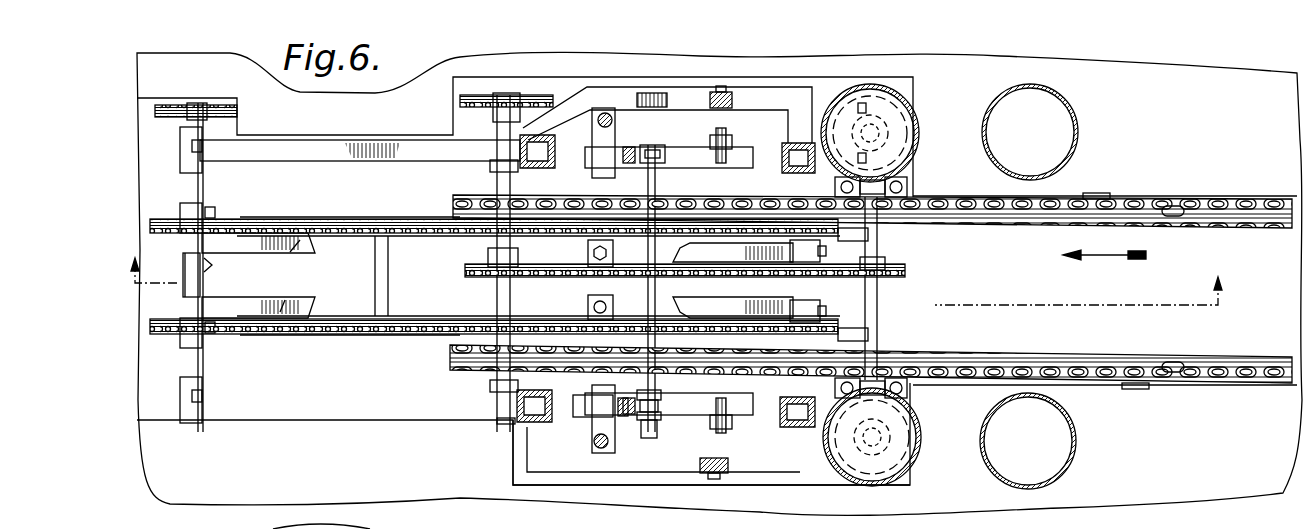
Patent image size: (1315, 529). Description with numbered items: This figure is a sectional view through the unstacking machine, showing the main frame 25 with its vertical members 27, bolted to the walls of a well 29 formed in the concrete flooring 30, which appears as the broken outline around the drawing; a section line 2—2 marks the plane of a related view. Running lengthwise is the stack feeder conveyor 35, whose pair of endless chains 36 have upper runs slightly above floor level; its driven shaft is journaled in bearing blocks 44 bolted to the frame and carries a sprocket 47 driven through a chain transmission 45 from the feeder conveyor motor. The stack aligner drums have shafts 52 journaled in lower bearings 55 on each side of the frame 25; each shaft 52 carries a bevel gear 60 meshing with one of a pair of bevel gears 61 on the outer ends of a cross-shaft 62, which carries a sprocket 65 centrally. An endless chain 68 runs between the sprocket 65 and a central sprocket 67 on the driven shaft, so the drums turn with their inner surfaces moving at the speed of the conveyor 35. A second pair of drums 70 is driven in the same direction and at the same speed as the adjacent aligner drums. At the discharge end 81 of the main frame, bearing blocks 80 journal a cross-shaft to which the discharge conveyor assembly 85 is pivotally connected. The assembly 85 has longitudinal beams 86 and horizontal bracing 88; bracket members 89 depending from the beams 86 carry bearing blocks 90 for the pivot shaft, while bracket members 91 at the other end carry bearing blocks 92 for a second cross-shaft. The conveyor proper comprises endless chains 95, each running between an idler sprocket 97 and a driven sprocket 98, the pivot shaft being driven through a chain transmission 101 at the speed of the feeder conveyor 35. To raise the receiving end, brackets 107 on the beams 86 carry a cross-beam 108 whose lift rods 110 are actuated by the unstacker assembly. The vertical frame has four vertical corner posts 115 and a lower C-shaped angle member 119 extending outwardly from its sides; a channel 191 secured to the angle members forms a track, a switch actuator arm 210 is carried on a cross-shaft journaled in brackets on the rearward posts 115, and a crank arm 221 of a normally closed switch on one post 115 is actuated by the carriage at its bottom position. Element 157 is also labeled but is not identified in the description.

The section line 2- 2 is at (674, 272).
The main frame 25 is at (1220, 386).
The vertical members 27 is at (1141, 390).
The well 29 is at (1097, 196).
The concrete flooring 30 is at (1222, 496).
The stack feeder conveyor 35 is at (1237, 205).
The endless chains 36 is at (1172, 210).
The bearing blocks 44 is at (493, 163).
The chain transmission 45 is at (460, 102).
The sprocket 47 is at (487, 96).
The shafts 52 is at (513, 425).
The lower bearings 55 is at (920, 113).
The bevel gear 60 is at (915, 127).
The bevel gears 61 is at (907, 155).
The cross-shaft 62 is at (878, 312).
The sprocket 65 is at (907, 180).
The central sprocket 67 is at (482, 266).
The endless chain 68 is at (545, 264).
The drums 70 is at (1078, 128).
The bearing blocks 80 is at (180, 141).
The discharge end 81 is at (259, 139).
The discharge conveyor assembly 85 is at (204, 185).
The longitudinal beams 86 is at (320, 217).
The horizontal bracing 88 is at (389, 268).
The bracket members 89 is at (295, 263).
The bearing block 90 is at (210, 268).
The bracket members 91 is at (733, 280).
The bearing blocks 92 is at (812, 252).
The endless chains 95 is at (386, 218).
The idler sprockets 97 is at (868, 237).
The driven sprockets 98 is at (163, 215).
The chain transmission 101 is at (185, 106).
The brackets 107 is at (612, 254).
The cross-beam 108 is at (592, 428).
The lift rods 110 is at (614, 121).
The vertical corner posts 115 is at (538, 170).
The lower C-shaped angle member 119 is at (770, 97).
The spacer 157 is at (688, 418).
The channel 191 is at (700, 465).
The switch actuator arm 210 is at (565, 290).
The crank arm 221 is at (648, 440).